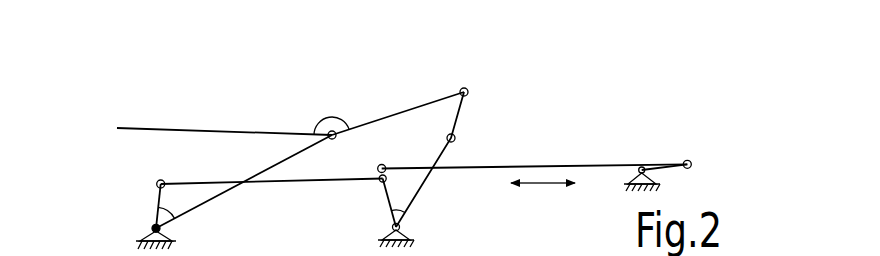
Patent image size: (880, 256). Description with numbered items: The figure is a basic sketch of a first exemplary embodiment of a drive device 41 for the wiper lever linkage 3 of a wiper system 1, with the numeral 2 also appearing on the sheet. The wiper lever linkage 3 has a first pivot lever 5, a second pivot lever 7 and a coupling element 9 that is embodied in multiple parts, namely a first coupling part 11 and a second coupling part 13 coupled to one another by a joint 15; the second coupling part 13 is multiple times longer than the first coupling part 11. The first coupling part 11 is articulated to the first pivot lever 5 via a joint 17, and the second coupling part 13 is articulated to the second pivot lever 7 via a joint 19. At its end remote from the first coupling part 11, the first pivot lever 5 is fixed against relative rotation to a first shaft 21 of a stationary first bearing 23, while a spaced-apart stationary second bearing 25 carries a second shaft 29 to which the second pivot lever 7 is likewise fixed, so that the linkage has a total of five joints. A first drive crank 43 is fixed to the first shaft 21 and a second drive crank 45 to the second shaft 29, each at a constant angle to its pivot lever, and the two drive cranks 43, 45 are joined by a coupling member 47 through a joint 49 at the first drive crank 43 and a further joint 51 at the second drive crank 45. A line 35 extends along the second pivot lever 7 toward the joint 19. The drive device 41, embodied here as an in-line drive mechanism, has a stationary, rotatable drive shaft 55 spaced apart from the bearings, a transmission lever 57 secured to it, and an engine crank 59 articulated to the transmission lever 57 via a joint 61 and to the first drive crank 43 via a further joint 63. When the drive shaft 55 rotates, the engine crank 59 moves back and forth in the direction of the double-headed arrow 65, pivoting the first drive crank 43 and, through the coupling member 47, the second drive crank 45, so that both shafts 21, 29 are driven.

The wiper system 1 is at (411, 128).
The mechanism portion 2 is at (450, 251).
The wiper lever linkage 3 is at (432, 135).
The first pivot lever 5 is at (420, 193).
The second pivot lever 7 is at (219, 198).
The coupling element 9 is at (402, 108).
The first coupling part 11 is at (458, 113).
The second coupling part 13 is at (373, 118).
The joint 15 is at (471, 88).
The joint 17 is at (458, 138).
The joint 19 is at (328, 118).
The first shaft 21 is at (391, 228).
The first bearing 23 is at (415, 236).
The second bearing 25 is at (134, 240).
The second shaft 29 is at (152, 226).
The guide bar 35 is at (157, 129).
The drive device 41 is at (689, 126).
The first drive crank 43 is at (388, 200).
The second drive crank 45 is at (158, 206).
The coupling member 47 is at (295, 184).
The joint 49 is at (373, 186).
The joint 51 is at (155, 178).
The drive shaft 55 is at (642, 166).
The transmission lever 57 is at (663, 172).
The engine crank 59 is at (572, 165).
The joint 61 is at (698, 158).
The joint 63 is at (390, 158).
The double-headed arrow 65 is at (548, 186).